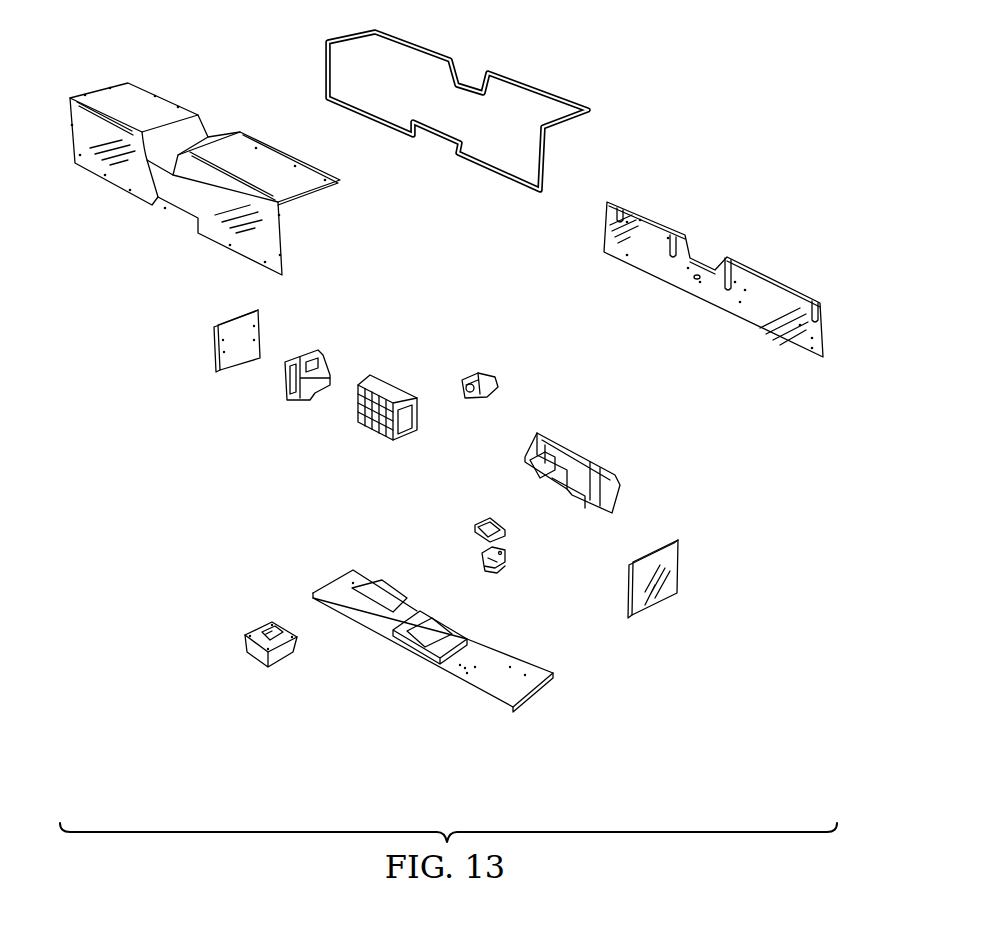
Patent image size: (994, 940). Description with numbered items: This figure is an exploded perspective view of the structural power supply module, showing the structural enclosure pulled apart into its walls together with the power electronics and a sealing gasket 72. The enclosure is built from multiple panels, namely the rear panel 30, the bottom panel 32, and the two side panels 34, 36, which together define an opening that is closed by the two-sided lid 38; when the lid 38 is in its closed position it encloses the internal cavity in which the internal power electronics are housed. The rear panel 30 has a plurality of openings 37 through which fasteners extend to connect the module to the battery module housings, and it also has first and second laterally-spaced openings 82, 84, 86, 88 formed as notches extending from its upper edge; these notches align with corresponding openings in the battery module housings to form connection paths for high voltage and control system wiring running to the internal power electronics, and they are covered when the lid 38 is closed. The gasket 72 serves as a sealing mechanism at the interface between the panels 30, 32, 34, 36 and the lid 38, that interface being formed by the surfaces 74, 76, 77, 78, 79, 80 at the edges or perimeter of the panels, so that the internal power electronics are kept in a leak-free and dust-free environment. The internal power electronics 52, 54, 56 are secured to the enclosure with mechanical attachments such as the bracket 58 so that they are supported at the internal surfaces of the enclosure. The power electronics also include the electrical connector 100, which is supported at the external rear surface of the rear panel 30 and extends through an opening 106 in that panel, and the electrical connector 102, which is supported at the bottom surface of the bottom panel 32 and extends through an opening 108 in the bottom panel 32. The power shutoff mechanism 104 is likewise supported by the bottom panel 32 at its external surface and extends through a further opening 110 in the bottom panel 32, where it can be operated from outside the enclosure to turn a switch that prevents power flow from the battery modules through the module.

The rear panel 30 is at (650, 214).
The bottom panel 32 is at (463, 644).
The side panel 34 is at (240, 372).
The side panel 36 is at (668, 578).
The openings 37 is at (626, 256).
The lid 38 is at (277, 170).
The internal power electronic component 52 is at (383, 438).
The internal power electronics 54 is at (480, 521).
The internal power electronics 56 is at (575, 481).
The bracket 58 is at (302, 399).
The gasket 72 is at (540, 82).
The interface surface 74 is at (707, 246).
The interface surface 76 is at (212, 354).
The interface surface 77 is at (237, 309).
The interface surface 78 is at (628, 588).
The interface surface 79 is at (658, 540).
The interface surface 80 is at (456, 681).
The opening 82 is at (816, 302).
The opening 84 is at (620, 208).
The opening 86 is at (728, 262).
The opening 88 is at (672, 236).
The electrical connector 100 is at (470, 374).
The electrical connector 102 is at (497, 572).
The power shutoff mechanism 104 is at (267, 669).
The opening 106 is at (694, 280).
The opening 108 is at (423, 648).
The opening 110 is at (410, 622).